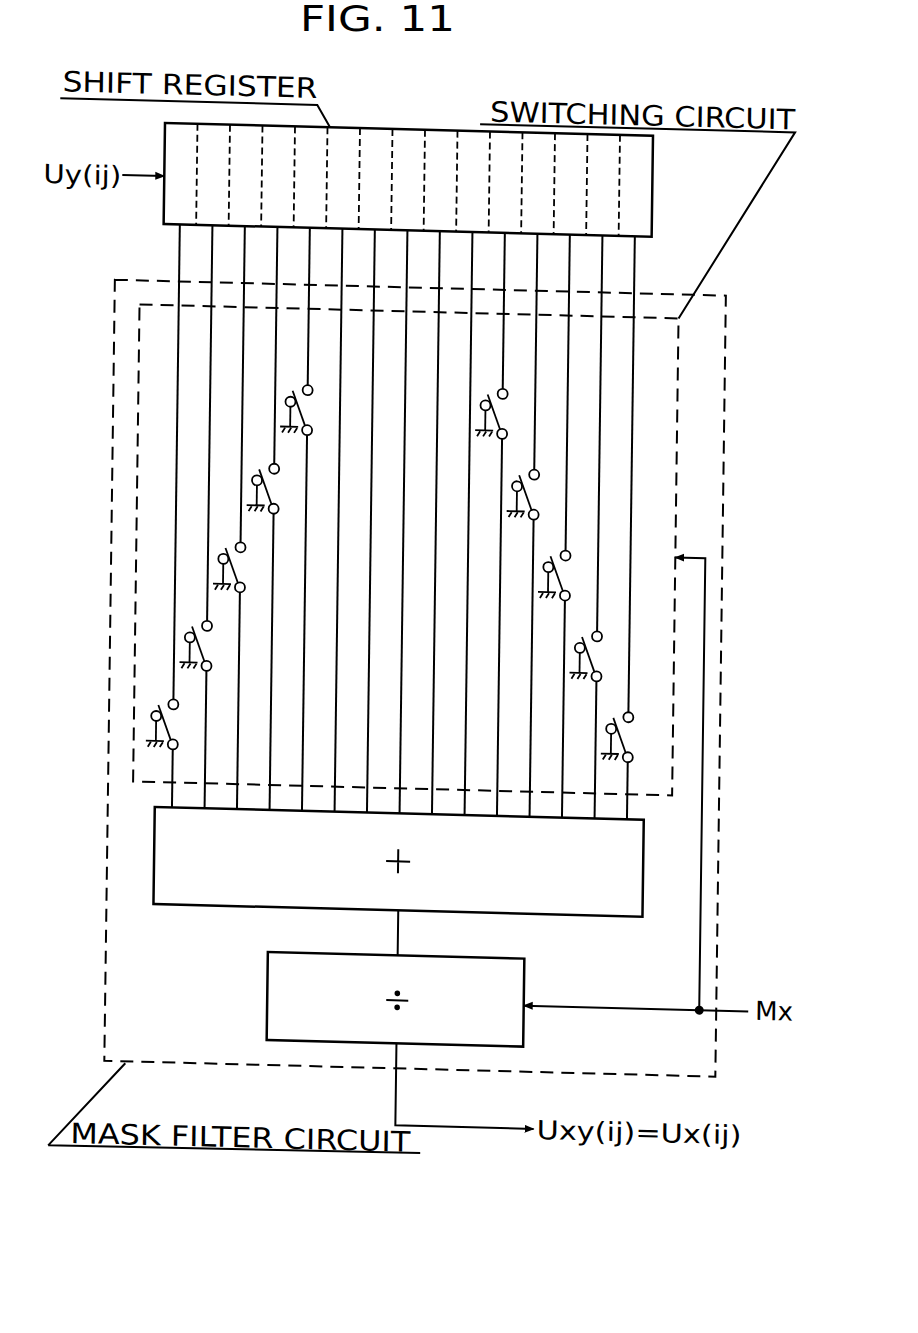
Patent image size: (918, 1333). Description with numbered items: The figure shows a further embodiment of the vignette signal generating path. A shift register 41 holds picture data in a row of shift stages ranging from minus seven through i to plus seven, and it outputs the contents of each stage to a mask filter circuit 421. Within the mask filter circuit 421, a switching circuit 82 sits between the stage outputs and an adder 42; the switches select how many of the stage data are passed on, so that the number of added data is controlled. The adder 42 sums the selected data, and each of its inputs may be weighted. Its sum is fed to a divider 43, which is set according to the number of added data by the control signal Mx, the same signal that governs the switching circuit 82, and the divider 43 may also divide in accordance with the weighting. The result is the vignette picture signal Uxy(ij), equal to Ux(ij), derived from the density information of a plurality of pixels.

The shift register 41 is at (165, 124).
The adder 42 is at (653, 869).
The divider 43 is at (536, 965).
The switching circuit 82 is at (691, 449).
The mask filter circuit 421 is at (728, 427).